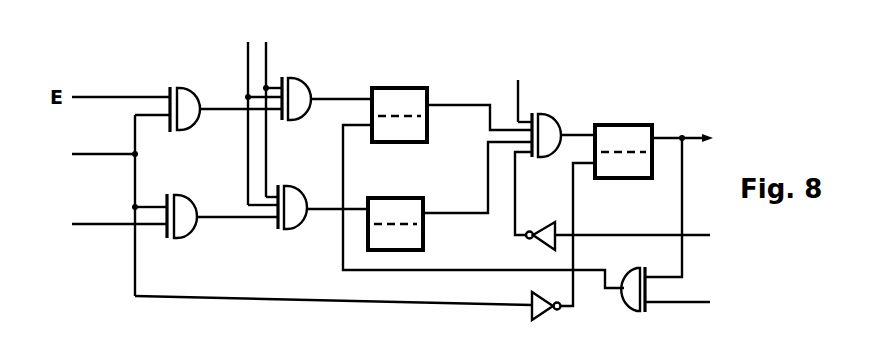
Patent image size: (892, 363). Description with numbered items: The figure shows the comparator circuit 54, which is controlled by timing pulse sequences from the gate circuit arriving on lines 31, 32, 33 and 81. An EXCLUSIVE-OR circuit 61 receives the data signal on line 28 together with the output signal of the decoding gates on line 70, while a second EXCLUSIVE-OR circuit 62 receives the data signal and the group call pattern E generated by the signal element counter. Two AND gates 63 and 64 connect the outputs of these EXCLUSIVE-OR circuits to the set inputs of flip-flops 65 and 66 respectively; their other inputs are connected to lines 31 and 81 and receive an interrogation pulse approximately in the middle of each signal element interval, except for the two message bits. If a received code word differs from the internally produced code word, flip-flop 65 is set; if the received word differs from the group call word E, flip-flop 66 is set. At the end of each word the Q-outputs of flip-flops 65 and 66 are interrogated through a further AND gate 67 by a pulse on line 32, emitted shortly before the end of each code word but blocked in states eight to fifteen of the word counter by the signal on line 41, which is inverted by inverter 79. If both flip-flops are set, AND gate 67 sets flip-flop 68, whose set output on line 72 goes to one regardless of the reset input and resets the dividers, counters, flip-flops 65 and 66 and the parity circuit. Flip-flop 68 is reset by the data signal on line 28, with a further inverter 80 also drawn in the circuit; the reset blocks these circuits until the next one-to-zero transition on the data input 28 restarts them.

The data signal line 28 is at (105, 205).
The output line of gates 570 to 577 70 is at (104, 219).
The second EXCLUSIVE-OR circuit 62 is at (184, 90).
The EXCLUSIVE-OR circuit 61 is at (190, 196).
The output line of gate circuit 59 81 is at (260, 113).
The output line of gate circuit 59 31 is at (279, 118).
The AND gate 64 is at (302, 87).
The AND gate 63 is at (290, 197).
The flip-flop 66 is at (418, 89).
The flip-flop 65 is at (392, 199).
The interrogation pulse line 32 is at (519, 85).
The further AND gate 67 is at (551, 121).
The flip-flop 68 is at (634, 126).
The reset signal line 72 is at (693, 198).
The inverter 79 is at (549, 223).
The blocking signal line 41 is at (647, 236).
The inverter 80 is at (538, 313).
The timing pulse line 33 is at (680, 290).
The comparator circuit 54 is at (268, 283).